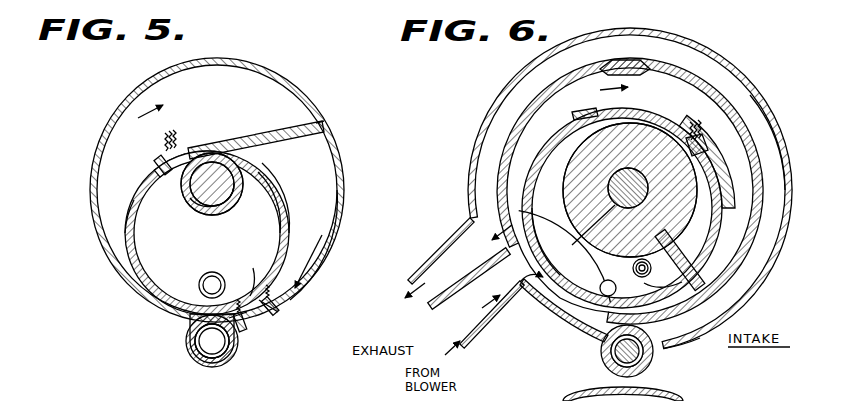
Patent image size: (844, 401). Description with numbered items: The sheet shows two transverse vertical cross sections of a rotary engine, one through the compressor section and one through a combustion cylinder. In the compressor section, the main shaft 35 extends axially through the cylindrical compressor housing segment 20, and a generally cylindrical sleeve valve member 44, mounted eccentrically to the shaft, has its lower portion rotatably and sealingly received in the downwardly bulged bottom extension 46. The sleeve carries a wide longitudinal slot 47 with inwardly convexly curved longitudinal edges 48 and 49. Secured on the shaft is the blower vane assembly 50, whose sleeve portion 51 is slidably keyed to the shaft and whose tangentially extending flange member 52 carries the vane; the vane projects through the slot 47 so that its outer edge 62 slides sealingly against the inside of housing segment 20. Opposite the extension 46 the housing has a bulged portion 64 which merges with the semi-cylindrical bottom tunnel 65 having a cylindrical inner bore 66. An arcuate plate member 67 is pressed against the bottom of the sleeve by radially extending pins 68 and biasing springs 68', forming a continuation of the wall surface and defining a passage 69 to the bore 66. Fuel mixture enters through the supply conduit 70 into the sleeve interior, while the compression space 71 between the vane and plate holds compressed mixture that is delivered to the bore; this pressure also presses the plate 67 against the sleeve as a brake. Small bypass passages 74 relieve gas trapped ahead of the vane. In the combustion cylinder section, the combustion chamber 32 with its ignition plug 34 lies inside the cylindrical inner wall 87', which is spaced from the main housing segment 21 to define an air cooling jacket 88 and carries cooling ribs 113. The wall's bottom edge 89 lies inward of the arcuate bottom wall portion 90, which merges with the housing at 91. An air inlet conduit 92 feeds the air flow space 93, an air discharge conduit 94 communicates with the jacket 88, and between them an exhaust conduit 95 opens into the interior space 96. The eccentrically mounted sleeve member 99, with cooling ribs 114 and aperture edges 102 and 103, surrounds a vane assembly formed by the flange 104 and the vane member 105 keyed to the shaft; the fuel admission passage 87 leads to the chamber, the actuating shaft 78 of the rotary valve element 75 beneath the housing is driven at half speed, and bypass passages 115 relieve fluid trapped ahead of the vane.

In FIG. 5, the compressor housing segment 20 is at (250, 63).
In FIG. 6, the main housing segment 21 is at (672, 37).
In FIG. 6, the combustion chamber 32 is at (564, 232).
In FIG. 6, the ignition plug 34 is at (640, 258).
In FIG. 5, the main shaft 35 is at (233, 209).
In FIG. 6, the main shaft 35 is at (587, 240).
In FIG. 5, the sleeve valve member 44 is at (288, 207).
In FIG. 5, the bottom extension 46 is at (162, 310).
In FIG. 5, the slot 47 is at (150, 178).
In FIG. 5, the longitudinal edge 48 is at (263, 163).
In FIG. 5, the longitudinal edge 49 is at (134, 197).
In FIG. 5, the blower vane assembly 50 is at (205, 152).
In FIG. 5, the sleeve portion 51 is at (196, 213).
In FIG. 5, the flange member 52 is at (272, 128).
In FIG. 5, the outer edge 62 is at (322, 127).
In FIG. 5, the bulged portion 64 is at (303, 293).
In FIG. 5, the bottom tunnel 65 is at (203, 367).
In FIG. 5, the cylindrical inner bore 66 is at (192, 347).
In FIG. 5, the arcuate plate member 67 is at (250, 290).
In FIG. 5, the radially extending pins 68 is at (275, 339).
In FIG. 5, the biasing springs 68' is at (274, 333).
In FIG. 5, the passage 69 is at (262, 320).
In FIG. 5, the fuel mixture supply conduit 70 is at (205, 276).
In FIG. 5, the compression space 71 is at (322, 193).
In FIG. 5, the bypass passages 74 is at (171, 134).
In FIG. 6, the roller 75 is at (641, 364).
In FIG. 6, the actuating shaft 78 is at (610, 356).
In FIG. 6, the fuel admission passage 87 is at (604, 278).
In FIG. 6, the cylindrical inner wall 87' is at (630, 175).
In FIG. 6, the air cooling jacket 88 is at (762, 132).
In FIG. 6, the longitudinal bottom edge 89 is at (612, 320).
In FIG. 6, the arcuate bottom wall portion 90 is at (560, 316).
In FIG. 6, the merging location 91 is at (658, 344).
In FIG. 6, the air inlet conduit 92 is at (476, 346).
In FIG. 6, the air flow space 93 is at (548, 297).
In FIG. 6, the air discharge conduit 94 is at (425, 263).
In FIG. 6, the exhaust conduit 95 is at (448, 306).
In FIG. 6, the interior space 96 is at (520, 167).
In FIG. 6, the sleeve member 99 is at (716, 181).
In FIG. 6, the aperture edge 102 is at (683, 265).
In FIG. 6, the aperture edge 103 is at (634, 275).
In FIG. 6, the flange 104 is at (658, 249).
In FIG. 6, the vane member 105 is at (660, 277).
In FIG. 6, the cooling ribs 113 is at (628, 61).
In FIG. 6, the cooling ribs 114 is at (592, 124).
In FIG. 6, the bypass passages 115 is at (699, 130).